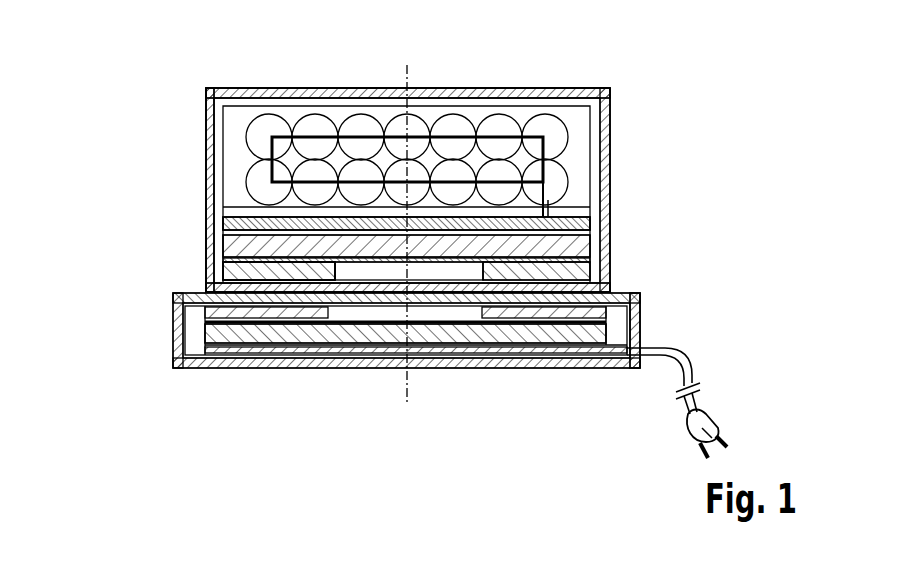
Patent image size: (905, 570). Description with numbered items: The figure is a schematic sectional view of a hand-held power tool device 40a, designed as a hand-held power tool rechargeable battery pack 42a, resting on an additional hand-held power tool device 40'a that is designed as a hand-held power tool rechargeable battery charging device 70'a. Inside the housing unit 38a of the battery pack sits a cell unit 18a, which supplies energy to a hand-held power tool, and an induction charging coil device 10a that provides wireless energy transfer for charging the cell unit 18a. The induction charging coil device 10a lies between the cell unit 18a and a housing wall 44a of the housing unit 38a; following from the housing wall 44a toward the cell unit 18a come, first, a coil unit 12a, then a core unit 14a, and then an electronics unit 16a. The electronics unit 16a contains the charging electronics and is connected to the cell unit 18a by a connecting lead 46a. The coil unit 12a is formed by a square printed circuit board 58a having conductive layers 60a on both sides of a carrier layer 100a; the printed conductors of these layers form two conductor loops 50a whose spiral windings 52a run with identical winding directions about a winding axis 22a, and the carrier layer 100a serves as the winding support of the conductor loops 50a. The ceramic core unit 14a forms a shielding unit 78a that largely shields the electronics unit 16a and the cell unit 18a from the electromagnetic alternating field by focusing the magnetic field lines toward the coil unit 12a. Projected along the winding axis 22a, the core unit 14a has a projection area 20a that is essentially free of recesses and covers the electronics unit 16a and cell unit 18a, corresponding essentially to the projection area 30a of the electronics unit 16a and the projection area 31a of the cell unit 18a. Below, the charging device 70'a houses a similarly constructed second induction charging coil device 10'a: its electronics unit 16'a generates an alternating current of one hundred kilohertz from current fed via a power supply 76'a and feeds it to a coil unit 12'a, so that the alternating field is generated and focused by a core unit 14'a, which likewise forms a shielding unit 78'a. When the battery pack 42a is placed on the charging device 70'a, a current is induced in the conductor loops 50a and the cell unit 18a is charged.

The induction charging coil device 10a is at (603, 254).
The coil unit 12a is at (228, 267).
The core unit 14a is at (228, 242).
The shielding unit 78a is at (351, 197).
The electronics unit 16a is at (227, 218).
The cell unit 18a is at (246, 112).
The projection area 20a is at (546, 233).
The winding axis 22a is at (408, 66).
The projection area 30a is at (445, 232).
The projection area 31a is at (500, 210).
The housing unit 38a is at (208, 127).
The hand-held power tool device 40a is at (600, 82).
The hand-held power tool rechargeable battery pack 42a is at (634, 92).
The housing wall 44a is at (227, 283).
The connecting lead 46a is at (548, 208).
The conductor loops 50a is at (290, 262).
The spiral windings 52a is at (300, 248).
The conductive layers 60a is at (283, 360).
The printed circuit board 58a is at (573, 275).
The carrier layer 100a is at (565, 287).
The induction charging coil device 10'a is at (339, 337).
The coil unit 12'a is at (439, 373).
The core unit 14'a is at (410, 400).
The shielding unit 78'a is at (433, 400).
The electronics unit 16'a is at (392, 371).
The hand-held power tool device 40'a is at (693, 329).
The hand-held power tool rechargeable battery charging device 70'a is at (346, 330).
The power supply 76'a is at (709, 403).